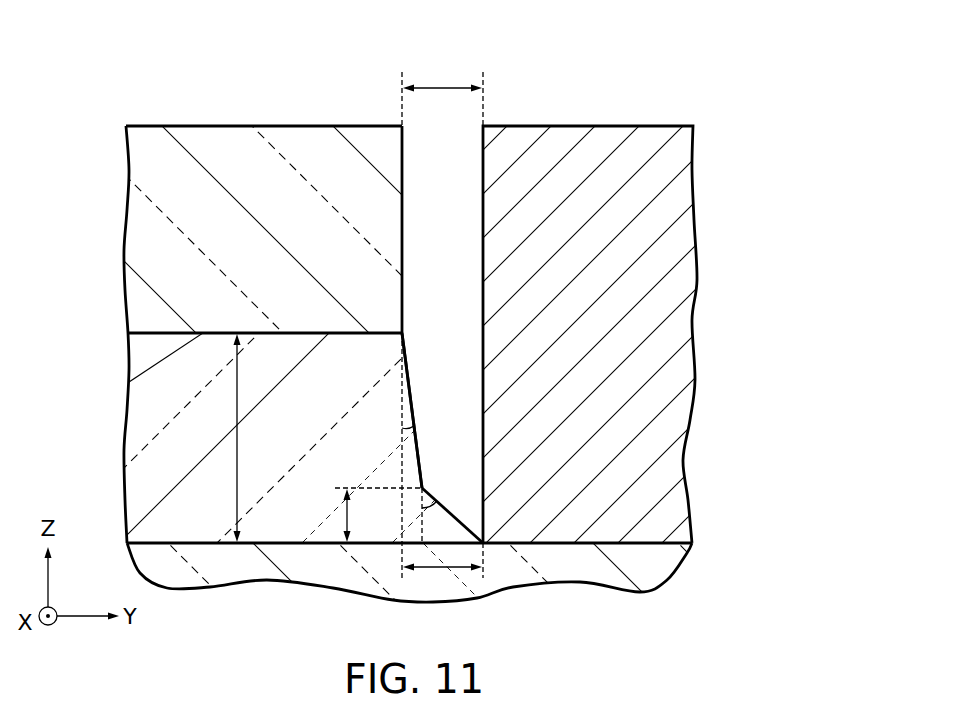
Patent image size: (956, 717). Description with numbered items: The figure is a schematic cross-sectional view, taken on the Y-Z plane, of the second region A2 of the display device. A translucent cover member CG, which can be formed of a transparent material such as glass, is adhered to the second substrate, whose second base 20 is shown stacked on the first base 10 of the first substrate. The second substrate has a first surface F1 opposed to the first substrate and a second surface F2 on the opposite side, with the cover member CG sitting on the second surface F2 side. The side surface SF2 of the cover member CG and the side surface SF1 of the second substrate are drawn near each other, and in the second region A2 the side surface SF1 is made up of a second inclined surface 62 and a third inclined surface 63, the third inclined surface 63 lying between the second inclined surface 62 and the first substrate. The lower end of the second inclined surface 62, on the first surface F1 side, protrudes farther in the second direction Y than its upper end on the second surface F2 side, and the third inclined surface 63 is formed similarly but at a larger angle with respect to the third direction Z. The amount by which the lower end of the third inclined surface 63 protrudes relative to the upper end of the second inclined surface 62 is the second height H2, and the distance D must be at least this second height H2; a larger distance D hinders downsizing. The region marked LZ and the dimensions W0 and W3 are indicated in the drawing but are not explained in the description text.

The second region A2 is at (328, 116).
The distance D is at (442, 93).
The side surface of the cover member SF2 is at (408, 215).
The cover member CG is at (127, 248).
The second surface F2 is at (203, 322).
The second base 20 is at (127, 397).
The thickness of second substrate W0 is at (217, 438).
The side surface of the second substrate SF1 is at (410, 349).
The second inclined surface 62 is at (411, 396).
The third inclined surface 63 is at (438, 502).
The height of surface 63 W3 is at (327, 515).
The second height H2 is at (442, 580).
The laser-processed region LZ is at (688, 323).
The first base 10 is at (672, 568).
The first surface F1 is at (189, 554).